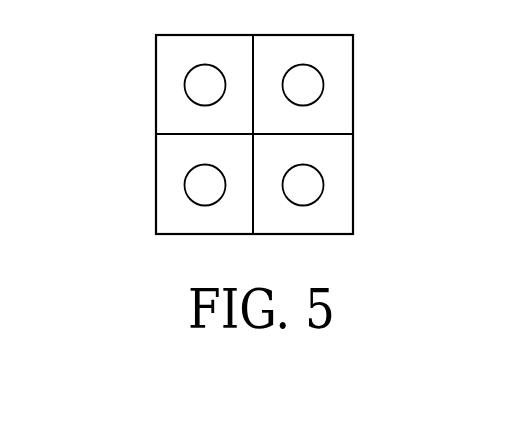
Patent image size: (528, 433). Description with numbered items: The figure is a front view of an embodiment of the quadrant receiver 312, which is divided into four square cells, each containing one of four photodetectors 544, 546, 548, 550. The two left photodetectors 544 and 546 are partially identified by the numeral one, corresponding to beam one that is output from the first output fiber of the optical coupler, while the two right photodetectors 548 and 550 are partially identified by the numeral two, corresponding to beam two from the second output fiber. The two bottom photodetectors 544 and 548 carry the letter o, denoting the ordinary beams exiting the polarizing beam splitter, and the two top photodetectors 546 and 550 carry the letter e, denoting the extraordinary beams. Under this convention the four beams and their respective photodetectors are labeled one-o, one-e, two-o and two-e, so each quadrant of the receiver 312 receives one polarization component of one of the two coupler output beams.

The quadrant receiver 312 is at (275, 159).
The photodetector 544 is at (156, 186).
The photodetector 546 is at (156, 84).
The photodetector 548 is at (353, 184).
The photodetector 550 is at (353, 83).